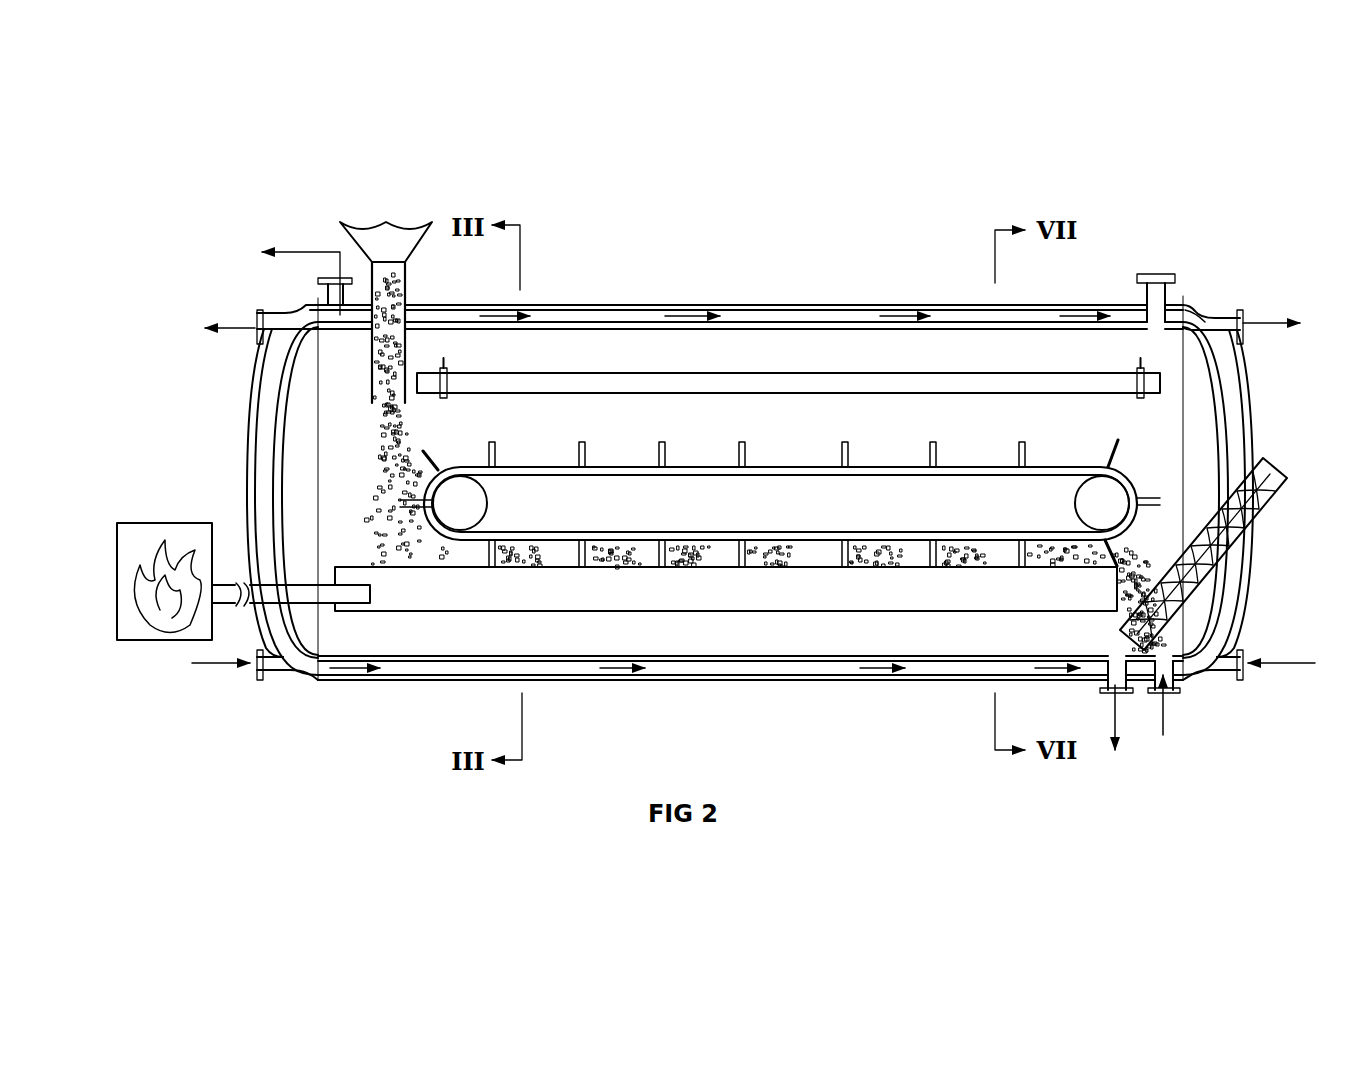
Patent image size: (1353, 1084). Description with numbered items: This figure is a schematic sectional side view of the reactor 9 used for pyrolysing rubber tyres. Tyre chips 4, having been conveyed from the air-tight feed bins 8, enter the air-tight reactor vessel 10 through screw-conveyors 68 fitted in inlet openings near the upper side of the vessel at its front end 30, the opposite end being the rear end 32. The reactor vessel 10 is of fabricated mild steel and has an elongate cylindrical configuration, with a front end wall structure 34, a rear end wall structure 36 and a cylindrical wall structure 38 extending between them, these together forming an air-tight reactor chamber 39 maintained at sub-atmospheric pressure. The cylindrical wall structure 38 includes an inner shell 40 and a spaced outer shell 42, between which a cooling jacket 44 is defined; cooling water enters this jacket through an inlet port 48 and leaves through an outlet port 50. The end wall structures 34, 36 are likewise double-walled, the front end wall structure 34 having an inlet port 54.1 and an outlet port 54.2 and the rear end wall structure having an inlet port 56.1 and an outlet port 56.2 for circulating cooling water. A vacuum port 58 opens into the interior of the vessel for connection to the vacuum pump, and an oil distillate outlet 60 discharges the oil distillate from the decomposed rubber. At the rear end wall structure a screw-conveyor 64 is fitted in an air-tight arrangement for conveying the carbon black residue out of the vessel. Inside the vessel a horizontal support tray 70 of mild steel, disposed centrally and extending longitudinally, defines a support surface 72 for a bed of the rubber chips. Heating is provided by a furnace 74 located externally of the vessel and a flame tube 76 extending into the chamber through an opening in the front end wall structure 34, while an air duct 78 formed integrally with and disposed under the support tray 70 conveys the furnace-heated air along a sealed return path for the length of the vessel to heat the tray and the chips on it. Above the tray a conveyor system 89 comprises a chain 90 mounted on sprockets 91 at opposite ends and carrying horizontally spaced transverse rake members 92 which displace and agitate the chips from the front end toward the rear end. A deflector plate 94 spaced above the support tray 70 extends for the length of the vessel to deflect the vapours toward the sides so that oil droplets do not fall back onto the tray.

The chips 4 is at (378, 480).
The feed bins 8 is at (356, 238).
The reactor 9 is at (1108, 262).
The reactor vessel 10 is at (1200, 303).
The front end 30 is at (232, 425).
The rear end 32 is at (1268, 390).
The front end wall structure 34 is at (248, 478).
The rear end wall structure 36 is at (1245, 440).
The cylindrical wall structure 38 is at (745, 302).
The reactor chamber 39 is at (573, 368).
The inner shell 40 is at (690, 660).
The outer shell 42 is at (733, 683).
The cooling jacket 44 is at (933, 310).
The inlet port 48 is at (1175, 690).
The outlet port 50 is at (322, 281).
The inlet port 54.1 is at (260, 682).
The outlet port 54.2 is at (257, 318).
The inlet port 56.1 is at (1245, 682).
The outlet port 56.2 is at (1243, 318).
The vacuum port 58 is at (1170, 274).
The oil distillate outlet 60 is at (1125, 692).
The screw-conveyor 64 is at (1265, 518).
The screw-conveyors 68 is at (388, 262).
The support tray 70 is at (628, 568).
The support surface 72 is at (540, 567).
The furnace 74 is at (140, 523).
The flame tube 76 is at (310, 585).
The air duct 78 is at (455, 598).
The conveyor system 89 is at (478, 460).
The chain 90 is at (1055, 466).
The sprockets 91 is at (1108, 494).
The rake members 92 is at (492, 445).
The deflector plate 94 is at (935, 382).